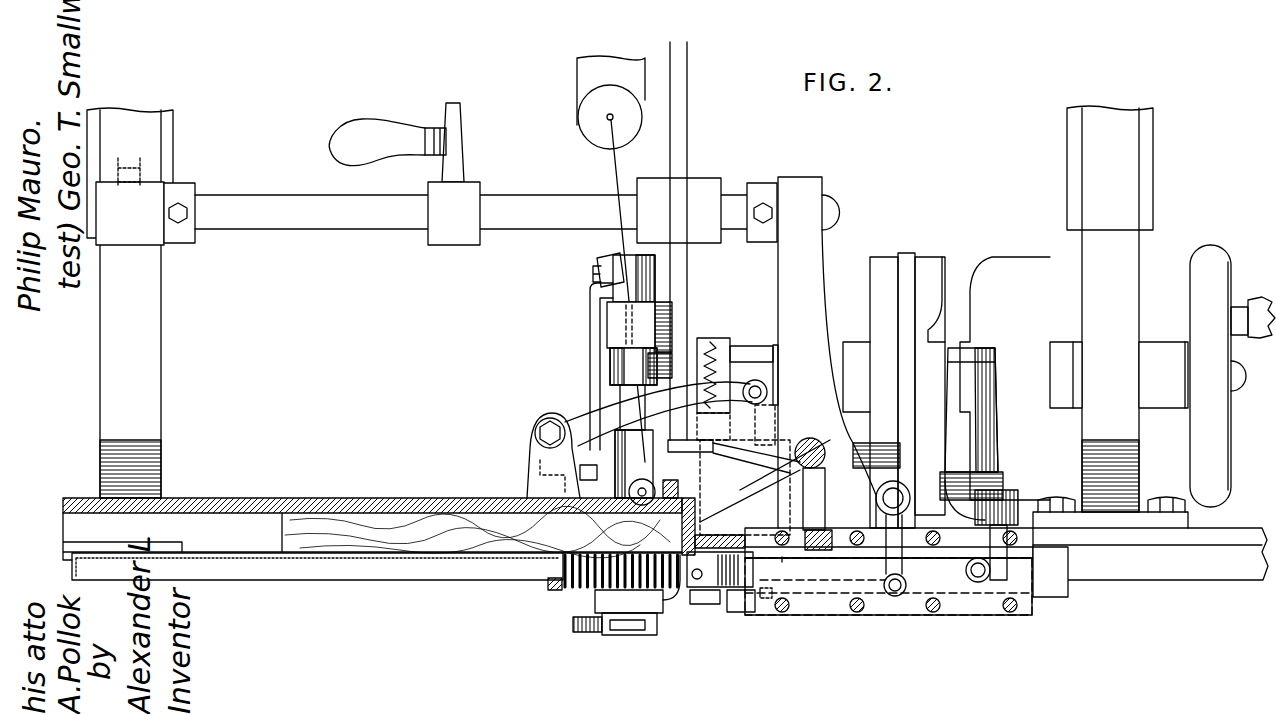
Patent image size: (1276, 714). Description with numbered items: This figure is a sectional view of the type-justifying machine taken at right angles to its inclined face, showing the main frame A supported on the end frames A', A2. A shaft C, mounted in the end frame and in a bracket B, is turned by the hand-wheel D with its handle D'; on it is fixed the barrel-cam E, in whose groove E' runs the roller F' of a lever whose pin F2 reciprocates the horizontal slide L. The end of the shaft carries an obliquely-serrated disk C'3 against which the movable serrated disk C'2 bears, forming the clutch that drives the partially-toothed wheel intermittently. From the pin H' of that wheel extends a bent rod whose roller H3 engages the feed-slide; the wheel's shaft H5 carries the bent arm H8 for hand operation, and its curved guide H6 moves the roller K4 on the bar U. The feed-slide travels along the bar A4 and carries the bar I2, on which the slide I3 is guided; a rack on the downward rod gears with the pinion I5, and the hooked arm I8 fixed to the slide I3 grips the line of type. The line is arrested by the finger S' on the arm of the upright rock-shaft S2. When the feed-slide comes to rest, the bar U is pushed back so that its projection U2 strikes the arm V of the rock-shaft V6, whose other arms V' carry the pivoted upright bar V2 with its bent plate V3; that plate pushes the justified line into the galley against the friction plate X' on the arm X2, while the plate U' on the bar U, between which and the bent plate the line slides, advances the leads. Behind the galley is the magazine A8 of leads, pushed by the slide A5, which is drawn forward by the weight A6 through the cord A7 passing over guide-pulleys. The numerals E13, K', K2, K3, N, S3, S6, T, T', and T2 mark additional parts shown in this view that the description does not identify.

The main frame A is at (665, 548).
The end frame A' is at (141, 303).
The end frame A2 is at (1113, 309).
The bar A4 is at (610, 601).
The slide A5 is at (330, 545).
The weight A6 is at (611, 102).
The cord A7 is at (619, 291).
The magazine A8 is at (372, 533).
The bracket B is at (839, 352).
The shaft C is at (737, 375).
The obliquely-serrated disk C'2 is at (706, 361).
The obliquely-serrated disk C'3 is at (720, 377).
The hand-wheel D is at (1218, 376).
The handle D' is at (1253, 317).
The barrel-cam E is at (946, 392).
The groove E' is at (932, 386).
The rod E13 is at (910, 362).
The roller F' is at (970, 436).
The pin F2 is at (996, 553).
The pin H' is at (734, 257).
The roller H3 is at (387, 142).
The shaft H5 is at (486, 210).
The curved guide H6 is at (672, 312).
The bent arm H8 is at (457, 174).
The bar I2 is at (612, 636).
The slide I3 is at (647, 636).
The pinion I5 is at (573, 628).
The hooked arm I8 is at (673, 597).
The block K' is at (720, 585).
The plate K2 is at (707, 612).
The plate K3 is at (741, 605).
The roller K4 is at (608, 368).
The horizontal slide L is at (1050, 572).
The guide N is at (765, 425).
The finger S' is at (863, 545).
The rock-shaft S2 is at (910, 500).
The pivot S3 is at (866, 495).
The stop S6 is at (730, 596).
The pivot lug T is at (552, 455).
The curved arm T' is at (658, 414).
The pivot T2 is at (767, 390).
The bar U is at (605, 352).
The plate U' is at (701, 471).
The projection U2 is at (646, 445).
The arm V is at (702, 432).
The arm V' is at (824, 509).
The upright bar V2 is at (836, 498).
The bent plate V3 is at (792, 564).
The rock-shaft V6 is at (814, 442).
The plate X' is at (608, 570).
The arm X2 is at (548, 588).